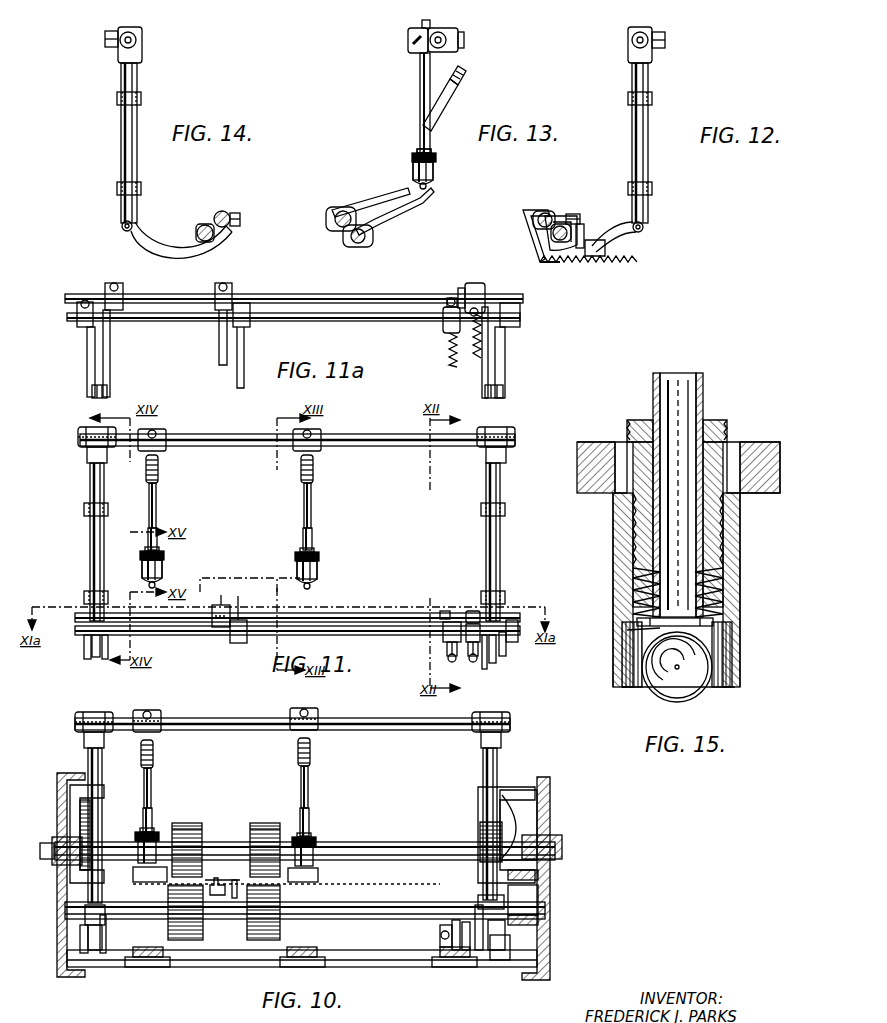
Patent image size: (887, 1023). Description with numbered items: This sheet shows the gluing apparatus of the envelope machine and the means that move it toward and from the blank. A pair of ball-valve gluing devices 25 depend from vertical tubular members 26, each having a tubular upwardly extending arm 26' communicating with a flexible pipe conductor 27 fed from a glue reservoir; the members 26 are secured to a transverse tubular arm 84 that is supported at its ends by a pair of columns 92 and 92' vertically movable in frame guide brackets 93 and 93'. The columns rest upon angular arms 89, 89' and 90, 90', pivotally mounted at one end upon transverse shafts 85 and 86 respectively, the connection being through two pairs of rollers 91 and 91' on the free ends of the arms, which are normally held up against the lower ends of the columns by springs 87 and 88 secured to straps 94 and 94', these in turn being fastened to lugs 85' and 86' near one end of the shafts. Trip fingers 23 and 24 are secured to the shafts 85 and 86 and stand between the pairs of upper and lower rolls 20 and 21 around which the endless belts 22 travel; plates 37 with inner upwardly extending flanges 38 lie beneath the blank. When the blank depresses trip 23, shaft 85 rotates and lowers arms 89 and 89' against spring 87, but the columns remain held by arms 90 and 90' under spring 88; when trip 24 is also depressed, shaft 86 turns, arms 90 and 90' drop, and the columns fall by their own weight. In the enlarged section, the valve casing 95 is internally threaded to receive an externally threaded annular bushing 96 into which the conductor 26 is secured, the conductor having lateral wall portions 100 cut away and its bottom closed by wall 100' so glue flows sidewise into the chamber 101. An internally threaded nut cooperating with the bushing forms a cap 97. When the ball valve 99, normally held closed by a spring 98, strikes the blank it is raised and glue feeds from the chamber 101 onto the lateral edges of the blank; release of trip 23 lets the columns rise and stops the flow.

In FIG. 10, the upper rolls 20 is at (182, 823).
In FIG. 10, the lower rolls 21 is at (185, 940).
In FIG. 10, the endless belts 22 is at (200, 822).
In FIG. 13, the trip device 23 is at (390, 196).
In FIG. 11A, the trip device 23 is at (219, 350).
In FIG. 11, the trip device 23 is at (221, 595).
In FIG. 10, the trip device 23 is at (216, 878).
In FIG. 13, the trip device 24 is at (418, 206).
In FIG. 11A, the trip device 24 is at (237, 380).
In FIG. 11, the trip device 24 is at (240, 600).
In FIG. 10, the trip device 24 is at (235, 880).
In FIG. 13, the ball-valve gluing device 25 is at (434, 172).
In FIG. 11, the ball-valve gluing device 25 is at (162, 566).
In FIG. 15, the ball-valve gluing device 25 is at (662, 590).
In FIG. 10, the ball-valve gluing device 25 is at (138, 845).
In FIG. 13, the tubular depending member 26 is at (403, 103).
In FIG. 11, the tubular depending member 26 is at (235, 538).
In FIG. 15, the tubular depending member 26 is at (698, 485).
In FIG. 10, the tubular depending member 26 is at (237, 808).
In FIG. 13, the tubular upwardly extending arm 26' is at (459, 105).
In FIG. 11, the tubular upwardly extending arm 26' is at (253, 505).
In FIG. 10, the tubular upwardly extending arm 26' is at (251, 787).
In FIG. 13, the flexible pipe conductor 27 is at (466, 77).
In FIG. 11, the flexible pipe conductor 27 is at (158, 468).
In FIG. 10, the flexible pipe conductor 27 is at (153, 753).
In FIG. 10, the plates 37 is at (133, 876).
In FIG. 10, the upwardly extending flanges 38 is at (135, 885).
In FIG. 14, the transverse tubular arm 84 is at (141, 32).
In FIG. 13, the transverse tubular arm 84 is at (448, 28).
In FIG. 12, the transverse tubular arm 84 is at (654, 30).
In FIG. 11, the transverse tubular arm 84 is at (378, 434).
In FIG. 10, the transverse tubular arm 84 is at (372, 718).
In FIG. 14, the transverse shaft 85 is at (239, 202).
In FIG. 13, the transverse shaft 85 is at (334, 204).
In FIG. 12, the transverse shaft 85 is at (555, 210).
In FIG. 11A, the transverse shaft 85 is at (294, 285).
In FIG. 11, the transverse shaft 85 is at (297, 605).
In FIG. 12, the lug 85' is at (531, 203).
In FIG. 11A, the lug 85' is at (493, 292).
In FIG. 11, the lug 85' is at (473, 588).
In FIG. 14, the transverse shaft 86 is at (207, 210).
In FIG. 13, the transverse shaft 86 is at (373, 233).
In FIG. 12, the transverse shaft 86 is at (575, 203).
In FIG. 11A, the transverse shaft 86 is at (293, 330).
In FIG. 11, the transverse shaft 86 is at (297, 645).
In FIG. 12, the lug 86' is at (598, 204).
In FIG. 11A, the lug 86' is at (442, 288).
In FIG. 11, the lug 86' is at (445, 586).
In FIG. 12, the spring 87 is at (548, 263).
In FIG. 11A, the spring 87 is at (476, 358).
In FIG. 11, the spring 87 is at (472, 662).
In FIG. 10, the spring 87 is at (468, 950).
In FIG. 12, the spring 88 is at (618, 263).
In FIG. 11A, the spring 88 is at (448, 356).
In FIG. 11, the spring 88 is at (450, 660).
In FIG. 10, the spring 88 is at (442, 940).
In FIG. 14, the angular arm 89 is at (190, 246).
In FIG. 11A, the angular arm 89 is at (124, 340).
In FIG. 11, the angular arm 89 is at (109, 659).
In FIG. 10, the angular arm 89 is at (119, 952).
In FIG. 12, the angular arm 89' is at (614, 237).
In FIG. 11A, the angular arm 89' is at (473, 353).
In FIG. 11, the angular arm 89' is at (481, 666).
In FIG. 10, the angular arm 89' is at (495, 959).
In FIG. 14, the angular arm 90 is at (190, 228).
In FIG. 11A, the angular arm 90 is at (73, 348).
In FIG. 11, the angular arm 90 is at (71, 655).
In FIG. 10, the angular arm 90 is at (90, 964).
In FIG. 12, the angular arm 90' is at (582, 227).
In FIG. 11A, the angular arm 90' is at (523, 350).
In FIG. 11, the angular arm 90' is at (523, 649).
In FIG. 10, the angular arm 90' is at (511, 959).
In FIG. 14, the rollers 91 is at (117, 237).
In FIG. 11A, the rollers 91 is at (117, 396).
In FIG. 11, the rollers 91 is at (90, 656).
In FIG. 10, the rollers 91 is at (66, 927).
In FIG. 12, the rollers 91' is at (665, 222).
In FIG. 11A, the rollers 91' is at (514, 399).
In FIG. 11, the rollers 91' is at (504, 663).
In FIG. 10, the rollers 91' is at (530, 927).
In FIG. 14, the column 92 is at (116, 143).
In FIG. 11, the column 92 is at (88, 524).
In FIG. 10, the column 92 is at (79, 807).
In FIG. 12, the column 92' is at (663, 143).
In FIG. 11, the column 92' is at (511, 524).
In FIG. 10, the column 92' is at (512, 806).
In FIG. 14, the frame guide bracket 93 is at (107, 142).
In FIG. 11, the frame guide bracket 93 is at (79, 545).
In FIG. 10, the frame guide bracket 93 is at (66, 830).
In FIG. 12, the frame guide bracket 93' is at (663, 139).
In FIG. 11, the frame guide bracket 93' is at (513, 544).
In FIG. 10, the frame guide bracket 93' is at (519, 819).
In FIG. 12, the strap 94 is at (523, 236).
In FIG. 11A, the strap 94 is at (467, 284).
In FIG. 11, the strap 94 is at (460, 624).
In FIG. 10, the strap 94 is at (440, 935).
In FIG. 12, the strap 94' is at (609, 218).
In FIG. 11A, the strap 94' is at (434, 320).
In FIG. 11, the strap 94' is at (435, 624).
In FIG. 10, the strap 94' is at (420, 937).
In FIG. 13, the valve casing 95 is at (413, 168).
In FIG. 11, the valve casing 95 is at (142, 570).
In FIG. 15, the valve casing 95 is at (735, 530).
In FIG. 13, the annular bushing 96 is at (432, 152).
In FIG. 15, the annular bushing 96 is at (723, 430).
In FIG. 13, the cap 97 is at (416, 152).
In FIG. 11, the cap 97 is at (164, 551).
In FIG. 15, the cap 97 is at (757, 442).
In FIG. 15, the spring 98 is at (715, 621).
In FIG. 13, the ball valve 99 is at (428, 186).
In FIG. 11, the ball valve 99 is at (149, 585).
In FIG. 15, the ball valve 99 is at (700, 695).
In FIG. 15, the cut-away lateral wall portions 100 is at (681, 592).
In FIG. 15, the bottom wall 100' is at (615, 640).
In FIG. 15, the chamber 101 is at (732, 643).